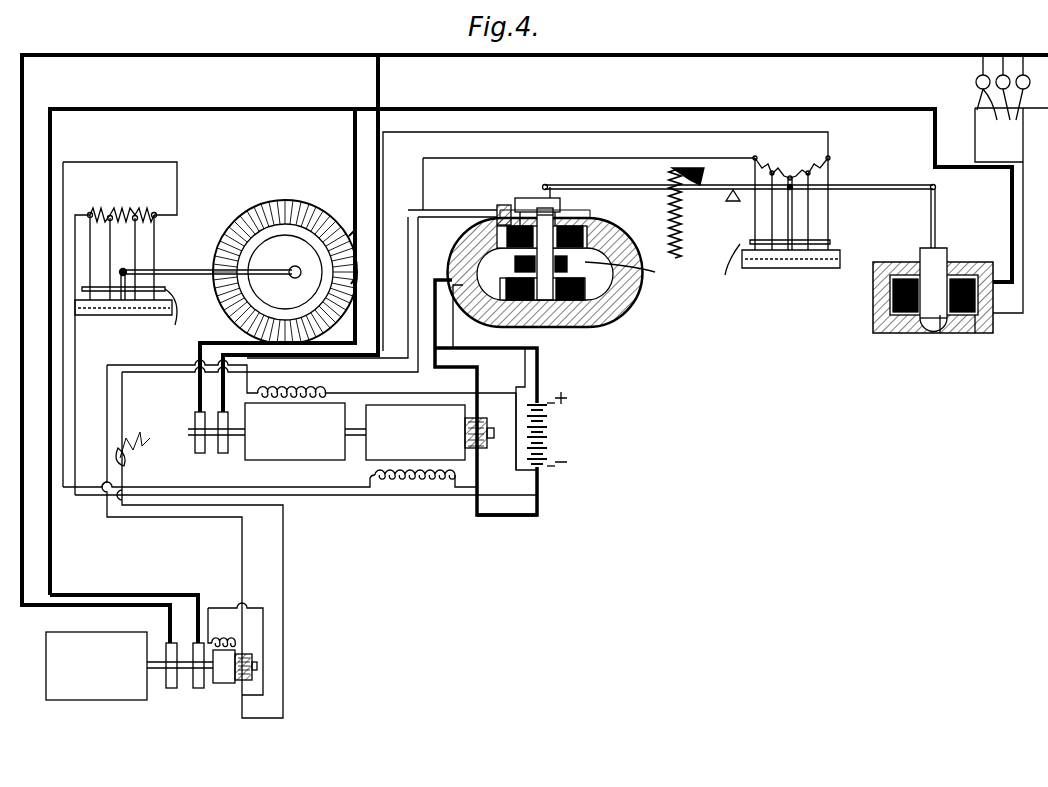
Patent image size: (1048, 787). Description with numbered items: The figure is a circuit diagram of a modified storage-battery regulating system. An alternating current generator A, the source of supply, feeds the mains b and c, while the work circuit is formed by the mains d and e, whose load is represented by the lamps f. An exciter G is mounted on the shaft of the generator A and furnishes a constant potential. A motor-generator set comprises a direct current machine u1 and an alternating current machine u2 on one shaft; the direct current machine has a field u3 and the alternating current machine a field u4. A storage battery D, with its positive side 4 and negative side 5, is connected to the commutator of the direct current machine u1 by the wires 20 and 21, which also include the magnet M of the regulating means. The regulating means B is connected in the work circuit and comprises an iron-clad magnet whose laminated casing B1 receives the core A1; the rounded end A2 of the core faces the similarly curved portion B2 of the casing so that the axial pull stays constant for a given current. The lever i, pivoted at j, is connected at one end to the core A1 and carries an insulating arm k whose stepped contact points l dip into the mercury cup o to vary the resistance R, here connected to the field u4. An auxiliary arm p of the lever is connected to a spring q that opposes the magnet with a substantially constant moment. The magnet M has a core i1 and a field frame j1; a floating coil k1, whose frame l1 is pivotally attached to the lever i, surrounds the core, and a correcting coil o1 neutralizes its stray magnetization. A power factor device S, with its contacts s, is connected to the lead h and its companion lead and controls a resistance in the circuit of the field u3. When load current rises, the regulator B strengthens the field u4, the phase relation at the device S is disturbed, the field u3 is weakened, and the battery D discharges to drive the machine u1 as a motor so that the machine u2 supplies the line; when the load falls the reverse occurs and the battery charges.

The main c is at (206, 50).
The main b is at (270, 118).
The main e is at (1016, 38).
The main d is at (999, 125).
The lamps f is at (1011, 201).
The variable resistance R is at (446, 311).
The power factor device S is at (239, 259).
The brushes s is at (350, 228).
The mercury cup o is at (118, 316).
The contact points l is at (142, 300).
The arm of insulation k is at (449, 297).
The floating coil k1 is at (497, 208).
The frame of the floating coil l1 is at (525, 198).
The lever i is at (618, 190).
The auxiliary arm p is at (702, 185).
The spring q is at (668, 200).
The pivot j is at (733, 195).
The correcting coil o1 is at (632, 273).
The wire 20 is at (435, 280).
The wire 21 is at (495, 516).
The lead h is at (873, 305).
The regulating means B is at (555, 267).
The core i1 is at (545, 300).
The field frame j1 is at (560, 300).
The magnet M is at (590, 300).
The core A1 is at (920, 252).
The rounded end of the core A2 is at (930, 330).
The curved portion of the casing B2 is at (945, 333).
The laminated iron casing B1 is at (985, 333).
The field of the alternating current machine u4 is at (397, 418).
The alternating current machine u2 is at (277, 431).
The direct current machine u1 is at (430, 432).
The field of the direct current machine u3 is at (423, 487).
The storage battery D is at (551, 428).
The positive side of the battery 4 is at (548, 403).
The negative terminal 5 is at (545, 470).
The source of supply A is at (129, 666).
The exciter G is at (222, 675).